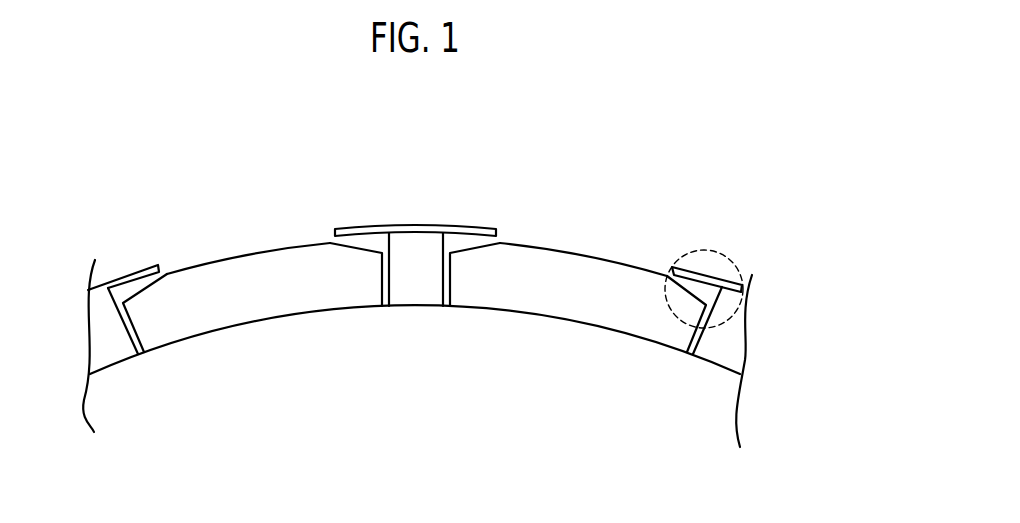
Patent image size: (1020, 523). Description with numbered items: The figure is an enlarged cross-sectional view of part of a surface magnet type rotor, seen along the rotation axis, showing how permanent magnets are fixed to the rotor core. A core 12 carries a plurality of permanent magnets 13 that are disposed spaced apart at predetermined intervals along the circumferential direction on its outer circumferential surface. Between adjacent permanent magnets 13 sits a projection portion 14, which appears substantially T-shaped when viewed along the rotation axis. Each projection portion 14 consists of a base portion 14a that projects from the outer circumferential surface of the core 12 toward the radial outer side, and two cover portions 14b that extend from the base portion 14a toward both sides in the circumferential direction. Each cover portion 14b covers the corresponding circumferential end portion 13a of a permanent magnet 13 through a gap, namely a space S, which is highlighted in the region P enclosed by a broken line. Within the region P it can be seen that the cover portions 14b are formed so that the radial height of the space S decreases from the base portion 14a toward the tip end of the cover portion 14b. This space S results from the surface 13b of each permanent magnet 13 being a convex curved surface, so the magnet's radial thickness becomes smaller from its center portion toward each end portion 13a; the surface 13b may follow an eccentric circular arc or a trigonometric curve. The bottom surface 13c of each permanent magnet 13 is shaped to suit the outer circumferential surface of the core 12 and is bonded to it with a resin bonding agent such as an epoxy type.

The core 12 is at (362, 358).
The permanent magnet 13 is at (415, 287).
The end portion 13a is at (147, 330).
The surface 13b is at (217, 260).
The bottom surface 13c is at (233, 325).
The projection portion 14 is at (470, 236).
The base portion 14a is at (485, 157).
The cover portion 14b is at (125, 270).
The region P is at (681, 256).
The space S is at (468, 243).